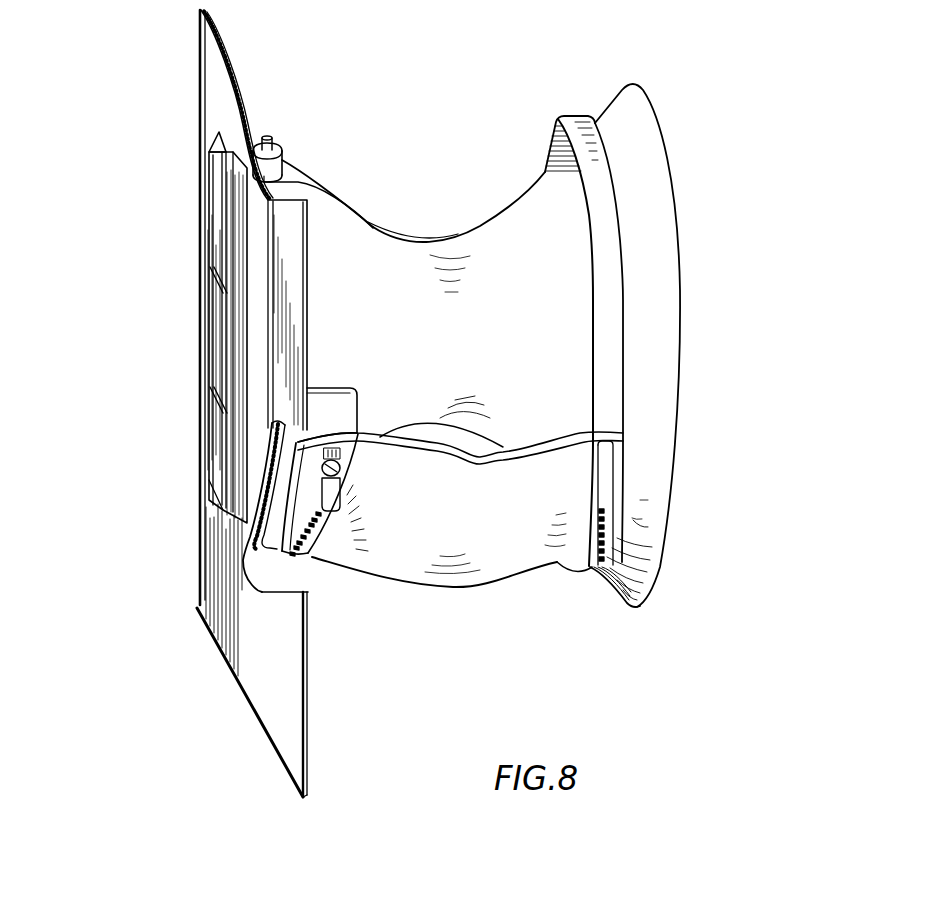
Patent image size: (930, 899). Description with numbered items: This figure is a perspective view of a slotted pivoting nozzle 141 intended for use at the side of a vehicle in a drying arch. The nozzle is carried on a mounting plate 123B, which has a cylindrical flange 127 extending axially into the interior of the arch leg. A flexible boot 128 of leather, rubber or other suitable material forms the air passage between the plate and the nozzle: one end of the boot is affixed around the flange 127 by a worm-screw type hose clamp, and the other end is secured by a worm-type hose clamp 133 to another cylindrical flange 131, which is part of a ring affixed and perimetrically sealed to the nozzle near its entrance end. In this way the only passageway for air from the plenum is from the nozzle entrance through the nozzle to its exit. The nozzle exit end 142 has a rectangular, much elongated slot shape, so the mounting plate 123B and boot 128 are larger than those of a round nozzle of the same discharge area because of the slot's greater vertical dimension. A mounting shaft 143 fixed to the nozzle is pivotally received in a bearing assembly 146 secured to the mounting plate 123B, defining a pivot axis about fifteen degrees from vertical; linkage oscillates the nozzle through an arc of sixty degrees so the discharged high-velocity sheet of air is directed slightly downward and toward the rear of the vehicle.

The mounting plate 123B is at (253, 678).
The cylindrical flange 127 is at (341, 406).
The boot 128 is at (440, 574).
The cylindrical flange 131 is at (577, 130).
The worm-type hose clamp 133 is at (590, 572).
The slotted pivoting nozzle 141 is at (147, 233).
The nozzle exit end 142 is at (216, 327).
The mounting shaft 143 is at (268, 135).
The bearing assembly 146 is at (282, 162).